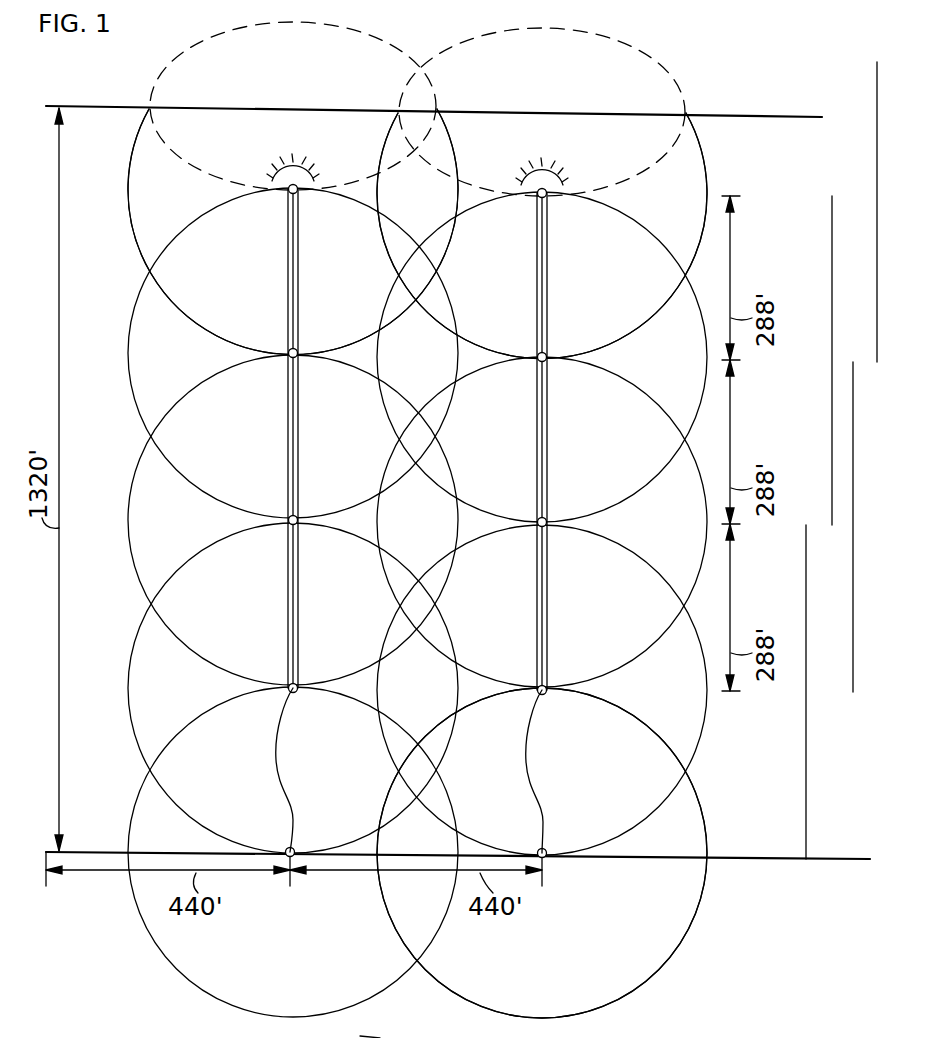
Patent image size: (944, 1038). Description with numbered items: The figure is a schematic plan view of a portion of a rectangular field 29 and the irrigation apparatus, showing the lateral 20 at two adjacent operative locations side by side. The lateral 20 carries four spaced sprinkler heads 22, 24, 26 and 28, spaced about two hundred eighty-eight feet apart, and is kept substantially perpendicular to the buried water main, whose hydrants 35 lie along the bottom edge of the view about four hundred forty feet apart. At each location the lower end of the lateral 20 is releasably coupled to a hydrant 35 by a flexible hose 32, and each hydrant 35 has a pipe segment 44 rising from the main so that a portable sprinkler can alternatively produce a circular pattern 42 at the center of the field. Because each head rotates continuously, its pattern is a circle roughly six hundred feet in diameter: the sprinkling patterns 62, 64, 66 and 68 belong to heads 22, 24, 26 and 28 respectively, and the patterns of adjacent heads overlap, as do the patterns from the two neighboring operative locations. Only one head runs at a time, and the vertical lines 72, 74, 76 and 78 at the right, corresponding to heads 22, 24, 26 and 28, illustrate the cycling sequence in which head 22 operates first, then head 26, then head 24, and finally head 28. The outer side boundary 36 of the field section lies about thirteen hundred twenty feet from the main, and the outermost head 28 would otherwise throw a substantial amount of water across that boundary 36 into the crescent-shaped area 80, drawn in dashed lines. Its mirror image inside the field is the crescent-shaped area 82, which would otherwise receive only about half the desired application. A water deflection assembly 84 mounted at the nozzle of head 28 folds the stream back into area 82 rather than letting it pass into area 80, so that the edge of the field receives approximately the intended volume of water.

The lateral 20 is at (300, 476).
The sprinkler head 22 is at (297, 692).
The sprinkler head 24 is at (298, 524).
The sprinkler head 26 is at (299, 357).
The sprinkler head 28 is at (299, 192).
The rectangular field 29 is at (372, 1037).
The flexible hose 32 is at (290, 787).
The hydrant 35 is at (287, 848).
The outer boundary 36 is at (127, 106).
The circular pattern 42 is at (143, 925).
The pipe segment 44 is at (694, 791).
The sprinkling pattern 62 is at (140, 757).
The sprinkling pattern 64 is at (138, 578).
The sprinkling pattern 66 is at (146, 400).
The sprinkling pattern 68 is at (146, 238).
The vertical line 72 is at (806, 748).
The vertical line 74 is at (853, 440).
The vertical line 76 is at (832, 306).
The vertical line 78 is at (877, 222).
The crescent-shaped area 80 is at (463, 52).
The crescent-shaped area 82 is at (190, 122).
The water deflection assembly 84 is at (276, 158).